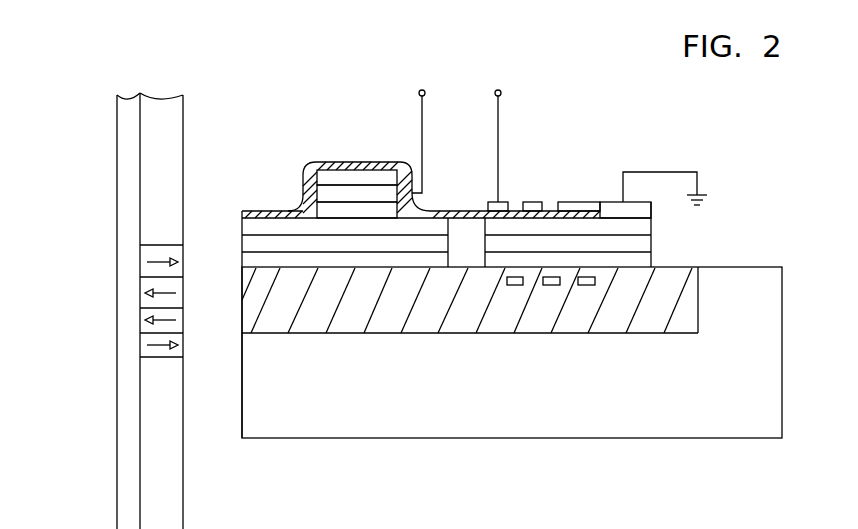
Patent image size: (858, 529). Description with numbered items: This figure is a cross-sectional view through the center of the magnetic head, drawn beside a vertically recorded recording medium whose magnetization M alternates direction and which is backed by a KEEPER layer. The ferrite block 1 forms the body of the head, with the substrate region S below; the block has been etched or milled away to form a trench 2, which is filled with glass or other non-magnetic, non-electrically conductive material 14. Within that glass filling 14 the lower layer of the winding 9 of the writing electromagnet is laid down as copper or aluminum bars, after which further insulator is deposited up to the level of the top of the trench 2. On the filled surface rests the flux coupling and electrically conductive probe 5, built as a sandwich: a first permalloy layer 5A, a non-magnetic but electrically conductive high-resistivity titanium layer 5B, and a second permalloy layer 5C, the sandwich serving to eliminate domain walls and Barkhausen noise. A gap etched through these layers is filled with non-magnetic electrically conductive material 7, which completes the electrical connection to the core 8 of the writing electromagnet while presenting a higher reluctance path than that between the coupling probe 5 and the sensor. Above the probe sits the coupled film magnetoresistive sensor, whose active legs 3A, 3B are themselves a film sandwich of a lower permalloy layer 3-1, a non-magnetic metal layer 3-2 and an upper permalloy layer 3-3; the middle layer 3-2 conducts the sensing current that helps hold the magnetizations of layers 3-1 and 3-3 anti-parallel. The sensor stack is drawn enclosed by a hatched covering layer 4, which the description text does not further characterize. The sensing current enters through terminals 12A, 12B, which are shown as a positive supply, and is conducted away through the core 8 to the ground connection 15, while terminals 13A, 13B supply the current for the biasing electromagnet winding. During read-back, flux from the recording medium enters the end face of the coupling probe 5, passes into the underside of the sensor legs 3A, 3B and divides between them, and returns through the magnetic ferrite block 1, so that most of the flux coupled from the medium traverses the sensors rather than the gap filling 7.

The ferrite block 1 is at (782, 330).
The substrate S is at (253, 407).
The trench 2 is at (700, 303).
The glass filling 14 is at (680, 283).
The sensor active leg 3A is at (337, 158).
The sensor active leg 3B is at (337, 158).
The magnetic film layer 3-1 is at (348, 215).
The non-magnetic metal layer 3-2 is at (372, 193).
The magnetic film layer 3-3 is at (392, 180).
The insulating protective layer 4 is at (334, 228).
The flux coupling probe 5 is at (426, 253).
The permalloy layer 5A is at (243, 257).
The titanium layer 5B is at (247, 242).
The permalloy layer 5C is at (248, 228).
The non-magnetic electrically conductive material 7 is at (463, 240).
The core 8 is at (668, 228).
The winding 9 is at (529, 202).
The terminal 12A is at (422, 127).
The terminal 12B is at (422, 127).
The terminal 13A is at (504, 136).
The terminal 13B is at (504, 136).
The ground connection 15 is at (678, 172).
The magnetization M is at (222, 88).
The keeper KEEPER is at (123, 108).